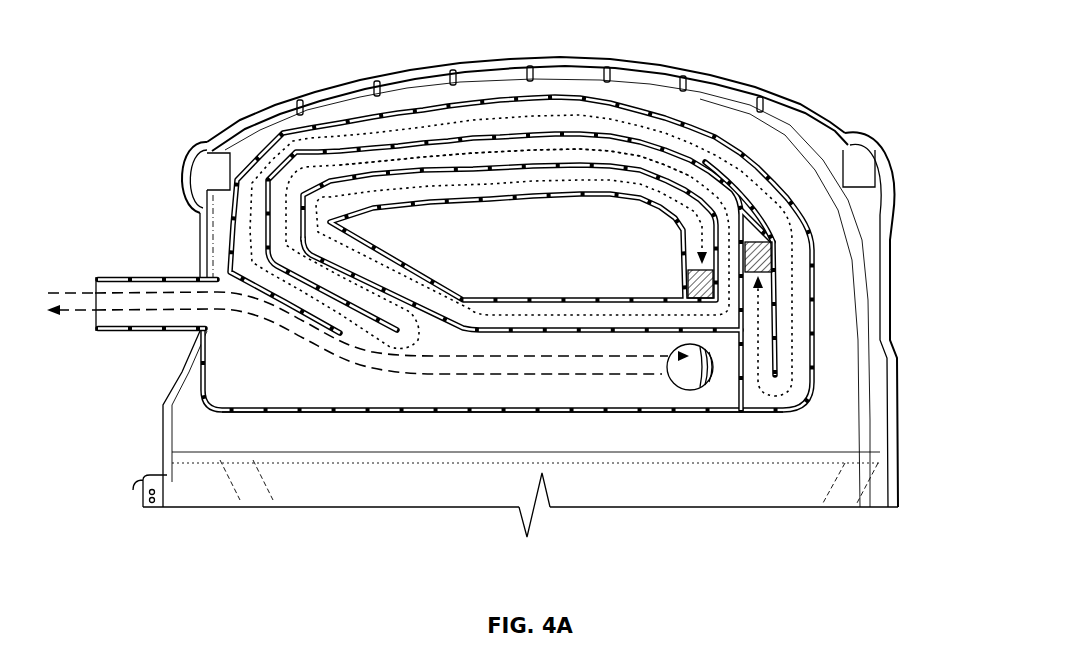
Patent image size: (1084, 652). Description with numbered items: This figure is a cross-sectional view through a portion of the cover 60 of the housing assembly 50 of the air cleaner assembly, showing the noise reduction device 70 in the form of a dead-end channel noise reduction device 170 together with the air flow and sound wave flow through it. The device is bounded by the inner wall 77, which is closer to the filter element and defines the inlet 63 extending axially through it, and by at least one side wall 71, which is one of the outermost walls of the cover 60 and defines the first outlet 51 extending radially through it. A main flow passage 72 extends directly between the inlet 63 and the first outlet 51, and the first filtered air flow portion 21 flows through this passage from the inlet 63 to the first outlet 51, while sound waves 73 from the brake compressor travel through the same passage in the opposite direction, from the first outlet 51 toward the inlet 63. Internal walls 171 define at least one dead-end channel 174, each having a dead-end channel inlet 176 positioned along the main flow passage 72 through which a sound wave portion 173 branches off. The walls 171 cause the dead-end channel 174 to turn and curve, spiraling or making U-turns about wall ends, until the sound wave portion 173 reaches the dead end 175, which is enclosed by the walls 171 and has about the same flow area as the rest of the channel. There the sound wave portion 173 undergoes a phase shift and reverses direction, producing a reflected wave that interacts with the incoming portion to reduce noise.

The first filtered air flow portion 21 is at (78, 312).
The housing assembly 50 is at (544, 282).
The cover 60 is at (897, 300).
The first outlet 51 is at (137, 333).
The inlet 63 is at (689, 392).
The noise reduction device 70 is at (502, 494).
The dead-end channel noise reduction device 170 is at (595, 424).
The side wall 71 is at (367, 113).
The main flow passage 72 is at (546, 478).
The sound waves 73 is at (62, 291).
The inner wall 77 is at (776, 224).
The internal wall 171 is at (300, 158).
The sound wave portion 173 is at (630, 133).
The dead-end channel 174 is at (424, 124).
The dead end 175 is at (774, 257).
The dead-end channel inlet 176 is at (358, 351).